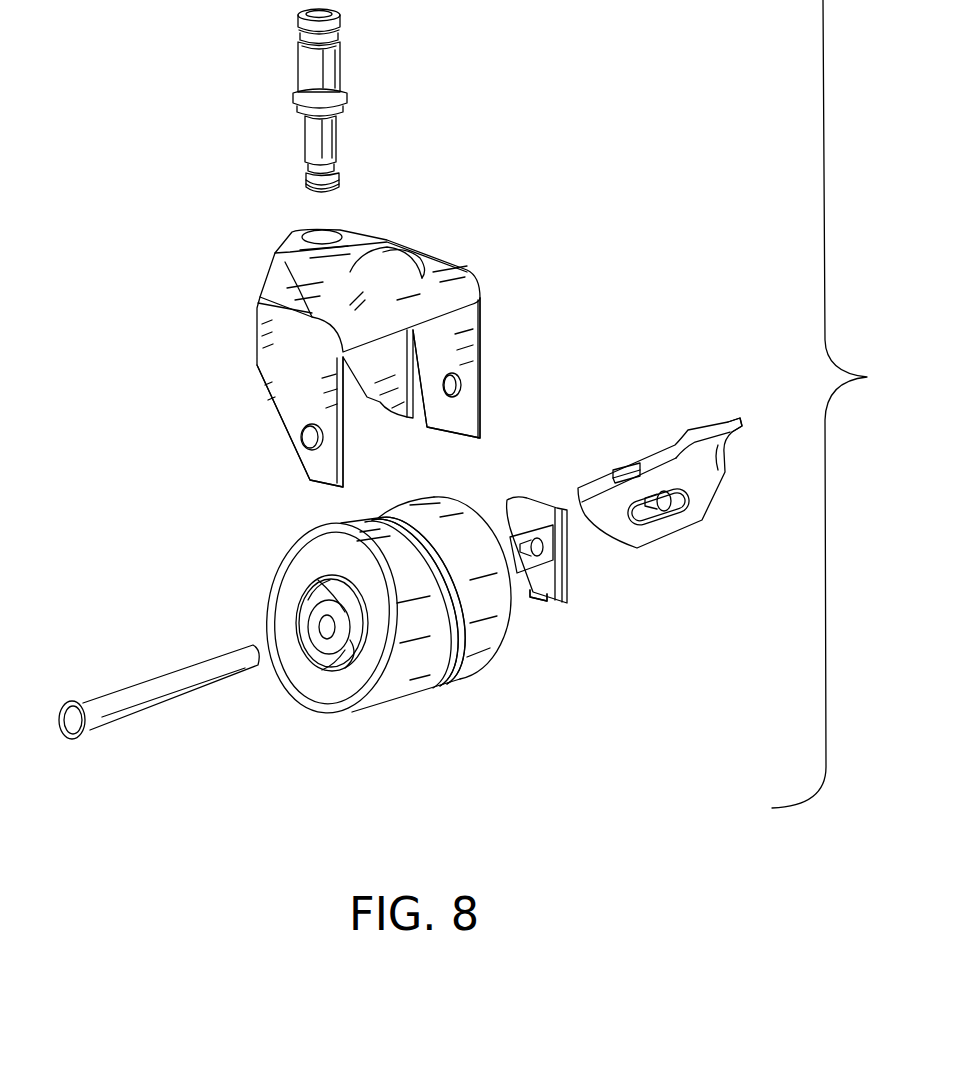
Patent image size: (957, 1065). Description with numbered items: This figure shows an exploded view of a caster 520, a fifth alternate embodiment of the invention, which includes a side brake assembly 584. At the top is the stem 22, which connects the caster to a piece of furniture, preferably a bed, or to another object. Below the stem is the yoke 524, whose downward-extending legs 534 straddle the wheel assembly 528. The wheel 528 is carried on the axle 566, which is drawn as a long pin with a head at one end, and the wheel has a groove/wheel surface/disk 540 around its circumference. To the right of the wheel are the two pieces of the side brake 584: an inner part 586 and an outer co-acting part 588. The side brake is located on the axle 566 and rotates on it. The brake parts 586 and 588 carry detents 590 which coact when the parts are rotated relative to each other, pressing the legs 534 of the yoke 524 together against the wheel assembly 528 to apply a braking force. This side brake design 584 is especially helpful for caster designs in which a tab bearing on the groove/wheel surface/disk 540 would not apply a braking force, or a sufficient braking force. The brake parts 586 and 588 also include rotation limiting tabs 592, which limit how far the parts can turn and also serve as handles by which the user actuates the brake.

The stem 22 is at (322, 66).
The caster 520 is at (468, 210).
The yoke 524 is at (186, 278).
The legs 534 is at (297, 400).
The wheel assembly 528 is at (407, 677).
The groove/wheel surface/disk 540 is at (450, 653).
The axle 566 is at (157, 690).
The side brake assembly 584 is at (655, 656).
The inner part 586 is at (530, 500).
The outer co-acting part 588 is at (697, 440).
The detents 590 is at (565, 538).
The rotation limiting tabs 592 is at (730, 418).